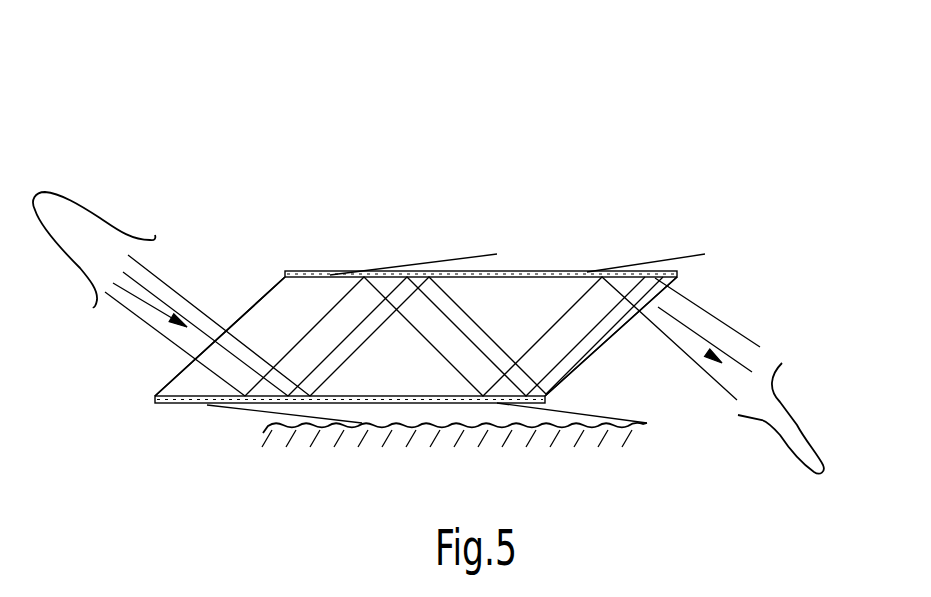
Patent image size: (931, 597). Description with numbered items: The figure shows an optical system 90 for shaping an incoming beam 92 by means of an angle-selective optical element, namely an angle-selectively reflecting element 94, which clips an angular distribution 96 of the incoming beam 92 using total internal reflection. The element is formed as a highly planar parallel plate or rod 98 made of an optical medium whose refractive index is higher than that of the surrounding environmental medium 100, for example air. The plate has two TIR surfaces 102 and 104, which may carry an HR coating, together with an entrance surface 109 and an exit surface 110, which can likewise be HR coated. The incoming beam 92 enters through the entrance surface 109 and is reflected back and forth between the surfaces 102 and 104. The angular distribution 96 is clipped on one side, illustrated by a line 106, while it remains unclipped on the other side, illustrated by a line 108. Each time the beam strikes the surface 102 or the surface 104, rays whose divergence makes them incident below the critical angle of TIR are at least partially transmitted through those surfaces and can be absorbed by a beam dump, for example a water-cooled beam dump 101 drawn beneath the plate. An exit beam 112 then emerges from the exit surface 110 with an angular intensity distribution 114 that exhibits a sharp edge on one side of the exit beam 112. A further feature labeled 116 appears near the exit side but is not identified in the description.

The optical system 90 is at (594, 184).
The incoming beam 92 is at (169, 234).
The angle-selectively reflecting element 94 is at (372, 216).
The angular distribution 96 is at (87, 184).
The plate or rod 98 is at (403, 365).
The environmental medium 100 is at (496, 219).
The beam dump 101 is at (317, 428).
The TIR surface 102 is at (320, 271).
The TIR surface 104 is at (210, 405).
The line 106 is at (157, 337).
The line 108 is at (177, 293).
The entrance surface 109 is at (263, 298).
The exit surface 110 is at (592, 353).
The exit beam 112 is at (756, 274).
The angular intensity distribution 114 is at (829, 397).
The receiver 116 is at (785, 448).